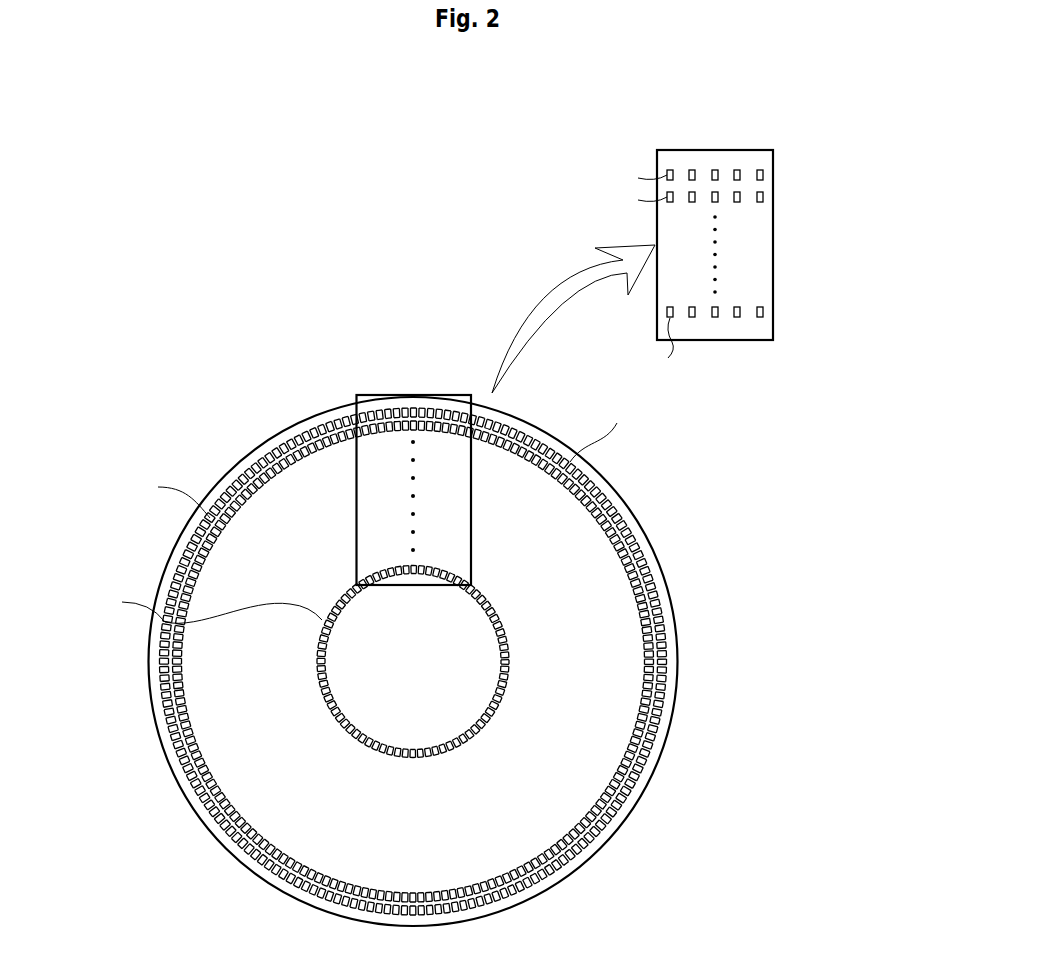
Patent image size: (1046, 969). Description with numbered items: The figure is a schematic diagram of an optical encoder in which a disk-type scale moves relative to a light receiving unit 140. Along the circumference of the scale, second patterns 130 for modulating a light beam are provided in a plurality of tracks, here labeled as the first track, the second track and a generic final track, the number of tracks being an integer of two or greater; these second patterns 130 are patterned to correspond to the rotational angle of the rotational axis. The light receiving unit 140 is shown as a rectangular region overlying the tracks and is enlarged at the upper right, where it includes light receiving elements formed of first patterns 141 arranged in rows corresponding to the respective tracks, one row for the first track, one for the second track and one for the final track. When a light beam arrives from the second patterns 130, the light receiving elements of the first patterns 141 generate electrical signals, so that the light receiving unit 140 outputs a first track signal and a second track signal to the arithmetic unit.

The second patterns 130 is at (513, 653).
The light receiving unit 140 is at (449, 393).
The first patterns 141 is at (765, 175).